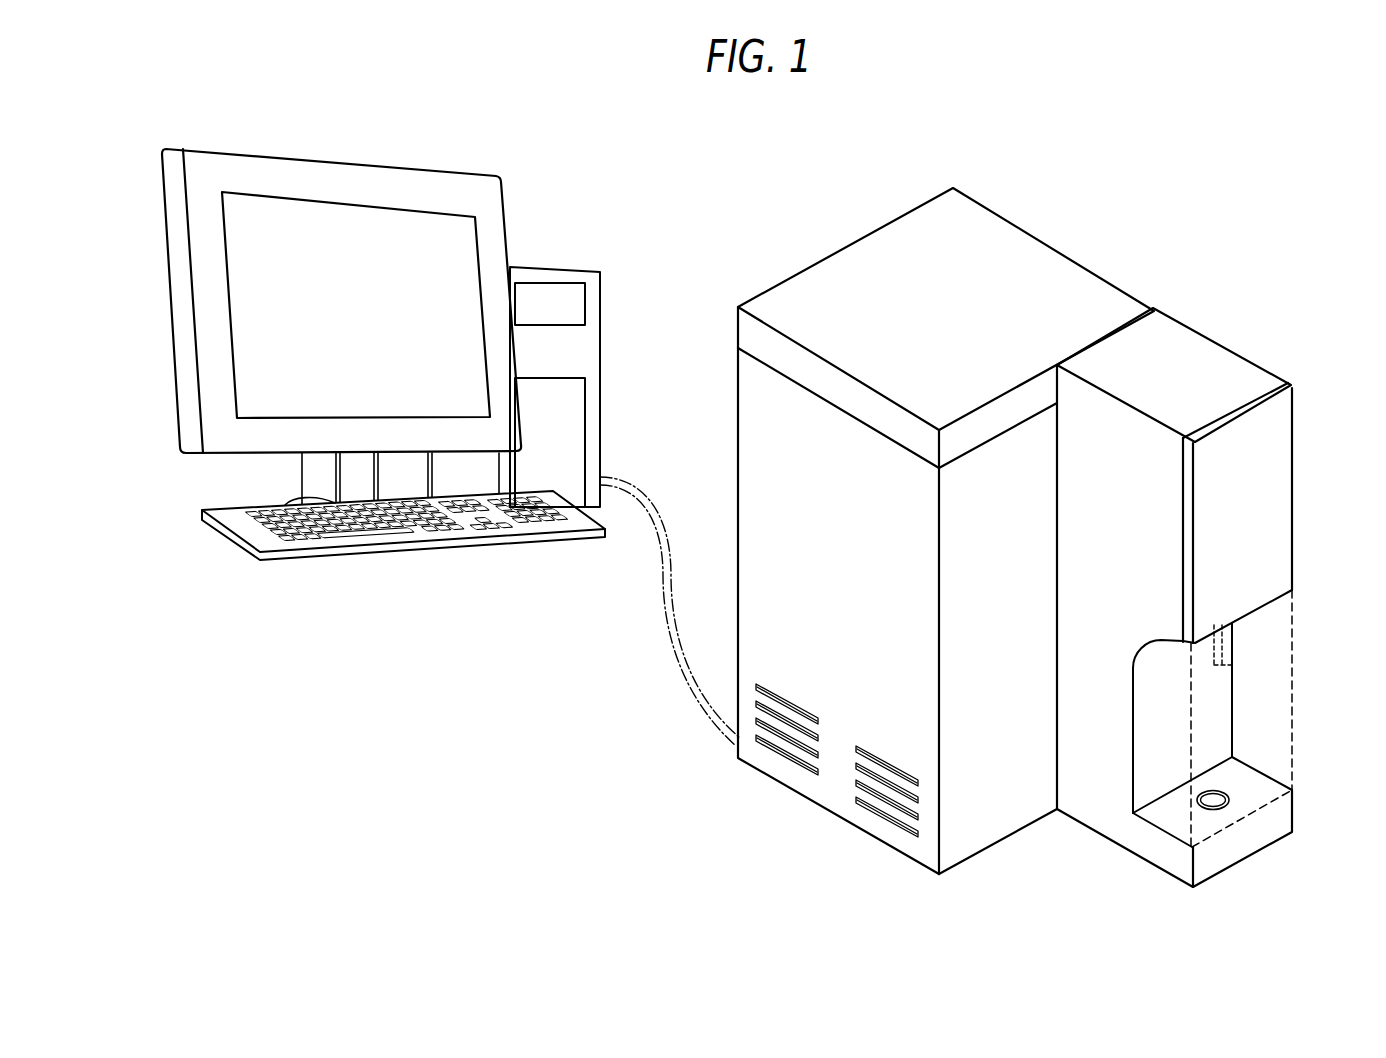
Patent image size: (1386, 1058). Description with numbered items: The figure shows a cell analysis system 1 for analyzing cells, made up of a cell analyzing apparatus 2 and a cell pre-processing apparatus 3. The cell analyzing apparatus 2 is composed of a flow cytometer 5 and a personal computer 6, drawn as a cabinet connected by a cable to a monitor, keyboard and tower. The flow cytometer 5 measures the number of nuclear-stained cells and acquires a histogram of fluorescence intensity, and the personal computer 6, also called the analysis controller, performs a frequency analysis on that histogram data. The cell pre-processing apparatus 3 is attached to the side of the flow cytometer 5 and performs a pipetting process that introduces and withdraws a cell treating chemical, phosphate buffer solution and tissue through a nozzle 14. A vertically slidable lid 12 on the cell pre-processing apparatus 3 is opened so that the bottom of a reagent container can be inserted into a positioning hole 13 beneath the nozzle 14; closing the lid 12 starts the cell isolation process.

The cell analysis system 1 is at (874, 141).
The cell analyzing apparatus 2 is at (807, 186).
The cell pre-processing apparatus 3 is at (1217, 366).
The flow cytometer 5 is at (842, 275).
The personal computer 6 is at (578, 263).
The lid 12 is at (1273, 713).
The positioning hole 13 is at (1225, 794).
The nozzle 14 is at (1227, 650).